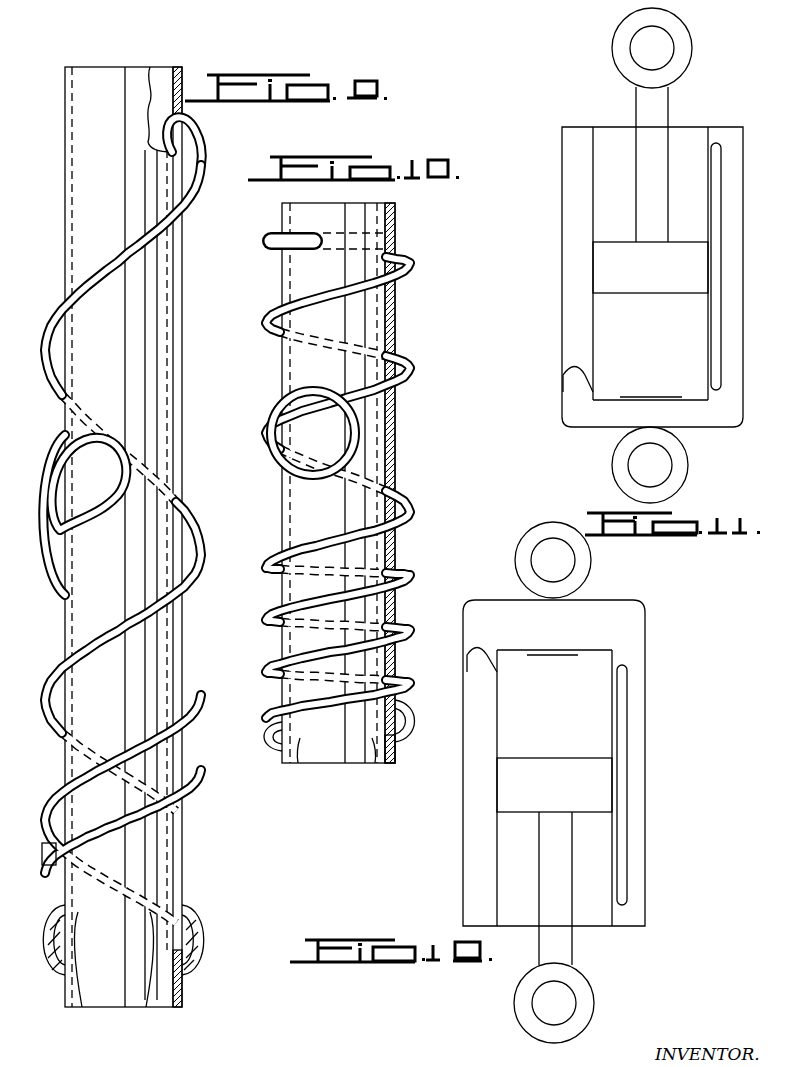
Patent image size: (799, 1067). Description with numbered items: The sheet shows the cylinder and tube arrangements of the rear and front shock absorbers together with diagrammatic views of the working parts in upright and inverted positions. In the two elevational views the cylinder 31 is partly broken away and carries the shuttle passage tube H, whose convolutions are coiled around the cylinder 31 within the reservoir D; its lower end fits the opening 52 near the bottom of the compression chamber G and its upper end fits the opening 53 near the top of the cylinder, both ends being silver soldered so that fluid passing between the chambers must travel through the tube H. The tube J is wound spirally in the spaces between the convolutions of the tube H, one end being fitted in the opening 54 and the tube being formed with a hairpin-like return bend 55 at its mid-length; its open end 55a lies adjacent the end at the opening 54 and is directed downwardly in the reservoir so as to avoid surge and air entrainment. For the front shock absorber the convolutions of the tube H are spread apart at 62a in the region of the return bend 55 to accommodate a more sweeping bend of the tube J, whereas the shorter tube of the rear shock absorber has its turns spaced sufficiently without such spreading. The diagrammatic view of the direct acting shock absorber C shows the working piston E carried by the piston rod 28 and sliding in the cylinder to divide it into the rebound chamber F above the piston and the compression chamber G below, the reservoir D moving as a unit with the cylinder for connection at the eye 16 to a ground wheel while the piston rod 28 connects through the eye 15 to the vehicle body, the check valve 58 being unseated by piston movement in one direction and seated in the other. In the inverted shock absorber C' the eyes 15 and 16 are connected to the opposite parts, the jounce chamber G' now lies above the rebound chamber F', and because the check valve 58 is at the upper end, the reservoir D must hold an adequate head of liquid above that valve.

In FIG. 9, the cylinder 31 is at (180, 283).
In FIG. 10, the cylinder 31 is at (395, 312).
In FIG. 9, the opening 53 is at (170, 140).
In FIG. 9, the return bend 55 is at (118, 440).
In FIG. 10, the return bend 55 is at (362, 432).
In FIG. 9, the tube H is at (193, 548).
In FIG. 10, the tube H is at (405, 372).
In FIG. 11, the tube H is at (743, 272).
In FIG. 12, the tube H is at (626, 835).
In FIG. 9, the tube J is at (196, 700).
In FIG. 10, the tube J is at (262, 455).
In FIG. 11, the tube J is at (560, 373).
In FIG. 12, the tube J is at (478, 688).
In FIG. 9, the open end of tube J 55a is at (68, 880).
In FIG. 10, the open end of tube J 55a is at (268, 716).
In FIG. 9, the opening 54 is at (72, 958).
In FIG. 10, the opening 54 is at (300, 740).
In FIG. 9, the opening 52 is at (166, 962).
In FIG. 10, the opening 52 is at (378, 718).
In FIG. 10, the spreading of convolutions 62a is at (340, 400).
In FIG. 11, the eye 15 is at (684, 46).
In FIG. 12, the eye 15 is at (583, 990).
In FIG. 11, the piston rod 28 is at (658, 105).
In FIG. 12, the piston rod 28 is at (566, 948).
In FIG. 11, the shock absorber C is at (620, 277).
In FIG. 11, the rebound chamber F is at (567, 189).
In FIG. 11, the reservoir D is at (568, 272).
In FIG. 12, the reservoir D is at (468, 748).
In FIG. 11, the working piston E is at (648, 283).
In FIG. 12, the working piston E is at (507, 785).
In FIG. 11, the compression chamber G is at (569, 345).
In FIG. 11, the check valve 58 is at (648, 395).
In FIG. 12, the check valve 58 is at (557, 658).
In FIG. 11, the eye 16 is at (612, 462).
In FIG. 12, the eye 16 is at (580, 570).
In FIG. 12, the shock absorber C' is at (577, 763).
In FIG. 12, the jounce chamber G' is at (640, 722).
In FIG. 12, the rebound chamber F' is at (466, 871).